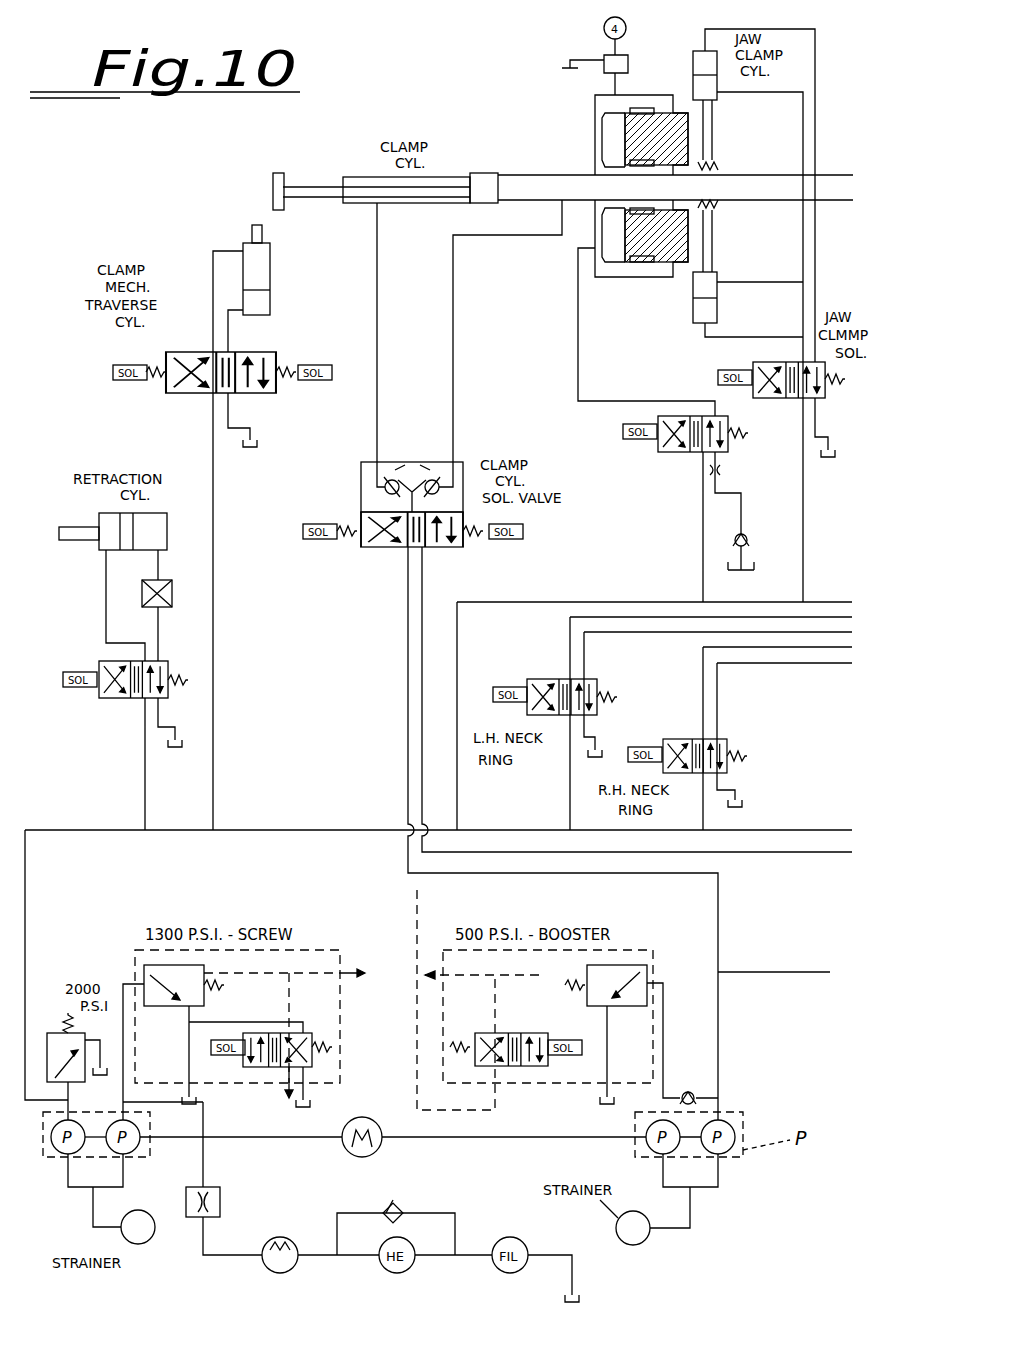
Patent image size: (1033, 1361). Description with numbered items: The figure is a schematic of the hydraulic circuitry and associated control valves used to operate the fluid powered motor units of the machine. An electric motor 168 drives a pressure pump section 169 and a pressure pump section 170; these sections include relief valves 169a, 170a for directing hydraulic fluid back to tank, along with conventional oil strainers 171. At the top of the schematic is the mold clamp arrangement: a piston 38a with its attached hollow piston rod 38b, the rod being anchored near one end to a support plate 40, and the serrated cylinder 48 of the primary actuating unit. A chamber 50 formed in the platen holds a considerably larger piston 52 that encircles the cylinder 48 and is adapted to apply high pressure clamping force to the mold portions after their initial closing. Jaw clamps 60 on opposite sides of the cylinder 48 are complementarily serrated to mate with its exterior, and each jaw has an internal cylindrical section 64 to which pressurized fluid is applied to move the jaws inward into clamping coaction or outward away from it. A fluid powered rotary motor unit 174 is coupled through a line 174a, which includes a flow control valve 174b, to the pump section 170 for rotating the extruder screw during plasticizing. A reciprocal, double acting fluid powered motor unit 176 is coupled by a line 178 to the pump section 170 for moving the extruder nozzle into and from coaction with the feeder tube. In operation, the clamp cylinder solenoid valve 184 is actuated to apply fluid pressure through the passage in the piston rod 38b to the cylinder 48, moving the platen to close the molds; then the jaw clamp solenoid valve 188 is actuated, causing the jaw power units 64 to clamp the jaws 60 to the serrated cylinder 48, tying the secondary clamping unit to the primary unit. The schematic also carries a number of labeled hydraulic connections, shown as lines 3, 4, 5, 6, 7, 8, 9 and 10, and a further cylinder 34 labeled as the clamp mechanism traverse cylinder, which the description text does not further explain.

The hydraulic line 3 is at (660, 706).
The hydraulic line 4 is at (716, 714).
The hydraulic line 5 is at (723, 686).
The hydraulic line 6 is at (783, 732).
The hydraulic line 7 is at (790, 729).
The hydraulic line 8 is at (444, 822).
The hydraulic line 9 is at (858, 847).
The supply line 10 is at (790, 971).
The clamp mechanism traverse cylinder 34 is at (272, 262).
The piston 38a is at (487, 172).
The piston rod 38b is at (308, 186).
The support plate 40 is at (282, 170).
The cylinder 48 is at (543, 176).
The chamber 50 is at (640, 95).
The piston 52 is at (690, 125).
The jaw clamps 60 is at (718, 160).
The internal cylindrical section 64 is at (717, 92).
The electric motor 168 is at (382, 1145).
The pressure pump section 169 is at (635, 1152).
The relief valve 169a is at (647, 965).
The pressure pump section 170 is at (50, 1160).
The relief valve 170a is at (47, 1050).
The oil strainers 171 is at (640, 1240).
The fluid powered rotary motor unit 174 is at (293, 1267).
The line 174a is at (203, 1160).
The flow control valve 174b is at (186, 1205).
The fluid powered motor unit 176 is at (167, 535).
The line 178 is at (145, 768).
The clamp cylinder solenoid valve 184 is at (463, 462).
The jaw clamp solenoid valve 188 is at (792, 398).